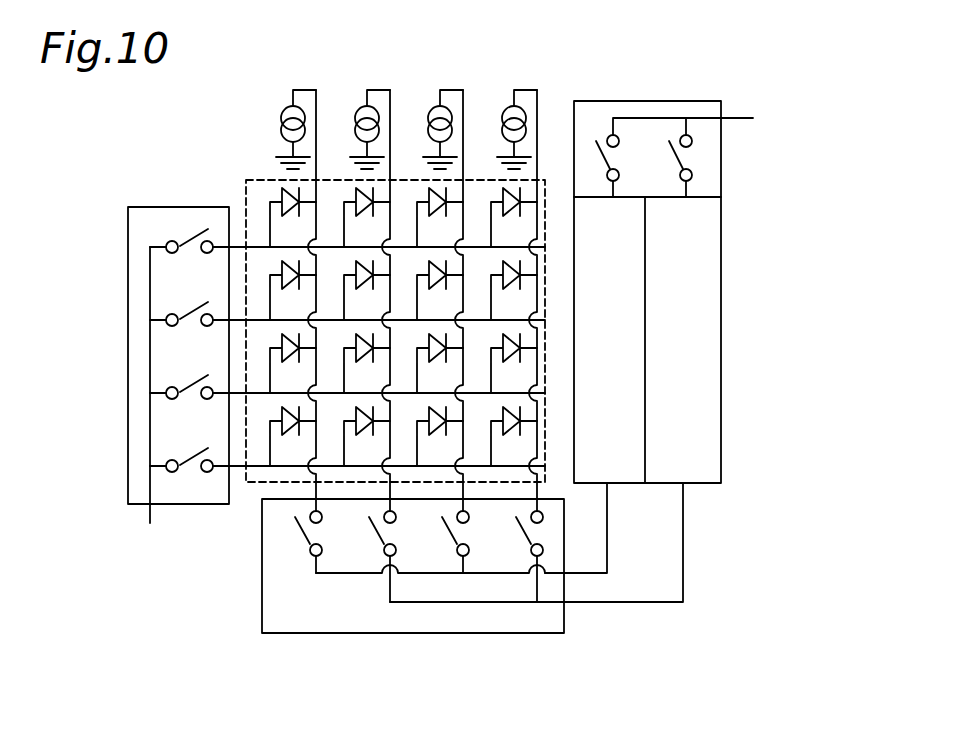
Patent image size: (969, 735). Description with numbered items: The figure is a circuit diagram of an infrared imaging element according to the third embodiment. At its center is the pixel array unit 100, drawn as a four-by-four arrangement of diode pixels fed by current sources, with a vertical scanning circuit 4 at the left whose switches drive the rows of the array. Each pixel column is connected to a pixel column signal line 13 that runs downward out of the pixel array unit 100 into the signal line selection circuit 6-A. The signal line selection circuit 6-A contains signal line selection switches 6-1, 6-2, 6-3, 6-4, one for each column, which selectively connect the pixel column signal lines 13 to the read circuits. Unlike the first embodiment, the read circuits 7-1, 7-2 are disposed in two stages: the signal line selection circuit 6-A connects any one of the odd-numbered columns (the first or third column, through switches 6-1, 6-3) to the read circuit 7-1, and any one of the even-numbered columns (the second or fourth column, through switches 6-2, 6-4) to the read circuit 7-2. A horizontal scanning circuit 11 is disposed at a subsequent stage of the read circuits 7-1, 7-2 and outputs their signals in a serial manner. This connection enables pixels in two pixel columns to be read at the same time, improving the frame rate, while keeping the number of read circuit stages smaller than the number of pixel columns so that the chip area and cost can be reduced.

The pixel array unit 100 is at (262, 180).
The vertical scanning circuit 4 is at (168, 207).
The horizontal scanning circuit 11 is at (721, 178).
The read circuit 7-2 is at (721, 410).
The read circuit 7-1 is at (628, 483).
The pixel column signal line 13 is at (316, 490).
The signal line selection circuit 6-A is at (262, 599).
The signal line selection switch 6-1 is at (312, 558).
The signal line selection switch 6-2 is at (386, 557).
The signal line selection switch 6-3 is at (459, 543).
The signal line selection switch 6-4 is at (532, 557).